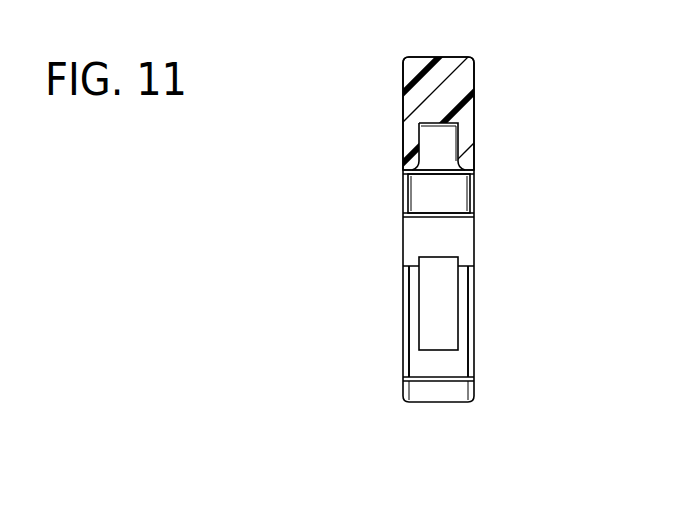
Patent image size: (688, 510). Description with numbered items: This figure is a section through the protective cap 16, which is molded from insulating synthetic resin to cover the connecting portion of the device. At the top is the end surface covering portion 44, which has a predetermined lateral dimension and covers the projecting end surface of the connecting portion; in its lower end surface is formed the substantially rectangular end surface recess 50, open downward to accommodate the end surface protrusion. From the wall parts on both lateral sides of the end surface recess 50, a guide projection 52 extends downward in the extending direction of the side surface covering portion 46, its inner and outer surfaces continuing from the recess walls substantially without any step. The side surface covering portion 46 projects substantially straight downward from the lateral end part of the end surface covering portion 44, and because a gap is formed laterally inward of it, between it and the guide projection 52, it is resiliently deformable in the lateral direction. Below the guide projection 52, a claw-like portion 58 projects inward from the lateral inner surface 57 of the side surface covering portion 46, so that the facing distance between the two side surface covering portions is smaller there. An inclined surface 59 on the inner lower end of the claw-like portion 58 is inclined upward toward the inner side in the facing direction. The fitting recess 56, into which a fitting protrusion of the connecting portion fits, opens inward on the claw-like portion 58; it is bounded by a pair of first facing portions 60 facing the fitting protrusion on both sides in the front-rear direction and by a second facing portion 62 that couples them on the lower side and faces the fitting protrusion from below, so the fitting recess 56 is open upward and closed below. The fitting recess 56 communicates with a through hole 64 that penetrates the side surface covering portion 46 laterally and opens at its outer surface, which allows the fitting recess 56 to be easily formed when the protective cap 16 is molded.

The protective cap 16 is at (503, 41).
The end surface covering portion 44 is at (436, 75).
The end surface recess 50 is at (453, 144).
The guide projection 52 is at (425, 193).
The side surface covering portion 46 is at (395, 223).
The lateral inner surface 57 is at (443, 241).
The claw-like portion 58 is at (480, 301).
The fitting recess 56 is at (435, 262).
The through hole 64 is at (438, 303).
The first facing portion 60 is at (413, 313).
The second facing portion 62 is at (438, 367).
The inclined surface 59 is at (433, 390).